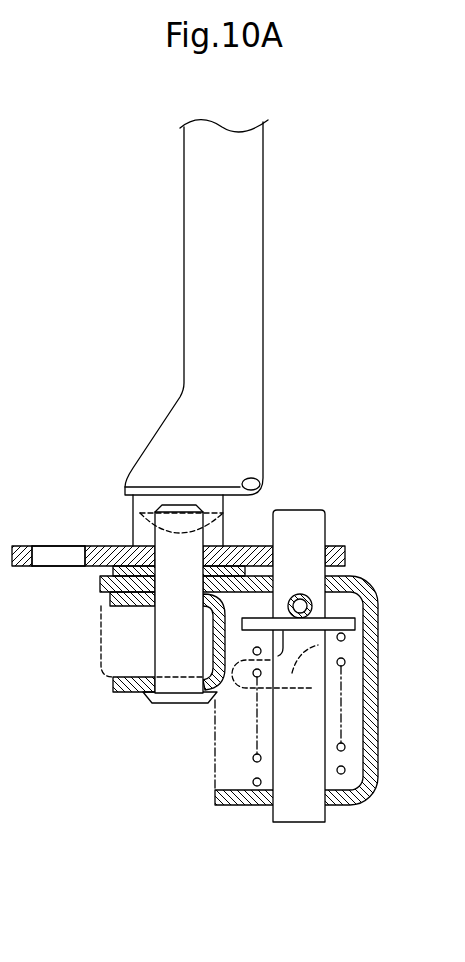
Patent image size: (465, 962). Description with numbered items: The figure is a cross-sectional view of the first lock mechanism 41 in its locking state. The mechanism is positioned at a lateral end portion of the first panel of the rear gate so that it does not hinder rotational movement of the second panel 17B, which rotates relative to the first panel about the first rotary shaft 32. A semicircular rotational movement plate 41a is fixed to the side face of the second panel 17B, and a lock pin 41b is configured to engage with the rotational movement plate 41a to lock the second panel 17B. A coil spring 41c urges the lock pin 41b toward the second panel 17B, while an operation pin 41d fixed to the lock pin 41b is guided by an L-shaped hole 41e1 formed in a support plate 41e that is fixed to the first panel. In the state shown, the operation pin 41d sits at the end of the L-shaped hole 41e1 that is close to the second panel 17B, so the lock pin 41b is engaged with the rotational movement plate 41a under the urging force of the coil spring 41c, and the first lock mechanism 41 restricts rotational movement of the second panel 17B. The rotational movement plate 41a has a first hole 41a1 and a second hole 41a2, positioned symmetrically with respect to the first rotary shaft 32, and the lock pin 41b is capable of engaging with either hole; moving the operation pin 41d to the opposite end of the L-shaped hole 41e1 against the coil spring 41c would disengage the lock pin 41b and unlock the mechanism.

The second panel 17B is at (262, 255).
The first lock mechanism 41 is at (237, 671).
The rotational movement plate 41a is at (254, 547).
The first hole 41a1 is at (322, 557).
The second hole 41a2 is at (59, 558).
The lock pin 41b is at (303, 813).
The coil spring 41c is at (345, 748).
The operation pin 41d is at (313, 608).
The support plate 41e is at (361, 806).
The L-shaped hole 41e1 is at (322, 681).
The first rotary shaft 32 is at (166, 642).